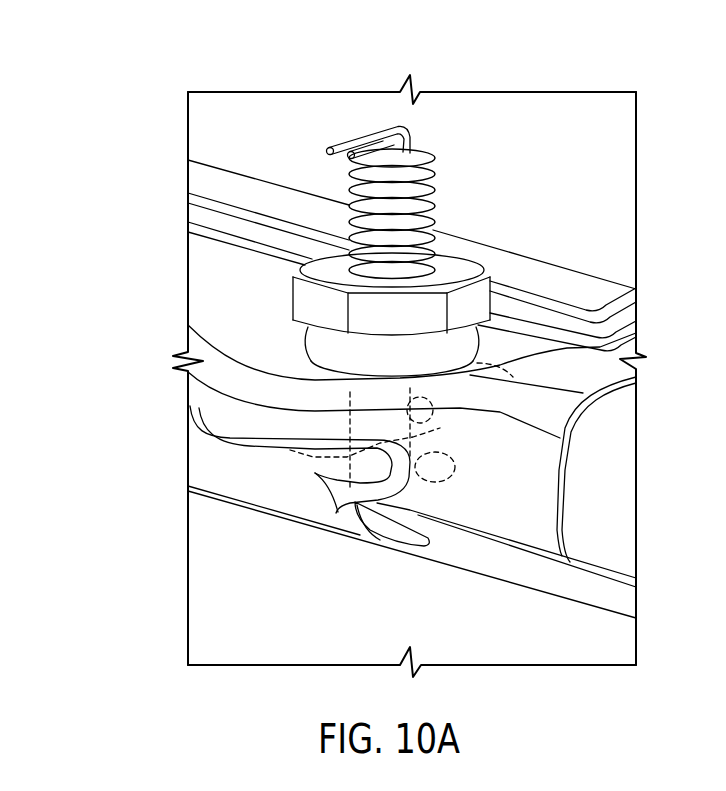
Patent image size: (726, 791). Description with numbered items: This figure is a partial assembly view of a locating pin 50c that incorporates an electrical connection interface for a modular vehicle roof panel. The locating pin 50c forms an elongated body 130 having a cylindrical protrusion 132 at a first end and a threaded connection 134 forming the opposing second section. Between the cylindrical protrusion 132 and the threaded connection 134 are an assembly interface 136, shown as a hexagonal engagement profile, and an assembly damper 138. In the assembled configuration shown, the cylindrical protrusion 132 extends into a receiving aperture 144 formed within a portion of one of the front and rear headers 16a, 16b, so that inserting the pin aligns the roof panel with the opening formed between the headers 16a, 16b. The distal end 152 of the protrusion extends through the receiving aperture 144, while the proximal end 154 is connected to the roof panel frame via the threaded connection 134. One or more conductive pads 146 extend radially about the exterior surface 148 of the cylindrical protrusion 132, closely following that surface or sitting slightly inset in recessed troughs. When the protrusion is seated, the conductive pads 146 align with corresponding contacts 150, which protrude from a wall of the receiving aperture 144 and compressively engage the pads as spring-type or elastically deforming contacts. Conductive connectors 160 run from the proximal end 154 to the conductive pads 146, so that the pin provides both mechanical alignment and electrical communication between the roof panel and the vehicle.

The front header 16a is at (214, 301).
The rear header 16b is at (342, 286).
The locating pin 50c is at (212, 149).
The elongated body 130 is at (412, 206).
The cylindrical protrusion 132 is at (367, 513).
The threaded connection 134 is at (433, 188).
The assembly interface 136 is at (492, 293).
The assembly damper 138 is at (460, 349).
The receiving aperture 144 is at (302, 358).
The conductive pads 146 is at (500, 367).
The exterior surface 148 is at (325, 499).
The contacts 150 is at (400, 487).
The distal end 152 is at (352, 542).
The proximal end 154 is at (313, 174).
The conductive connectors 160 is at (372, 125).